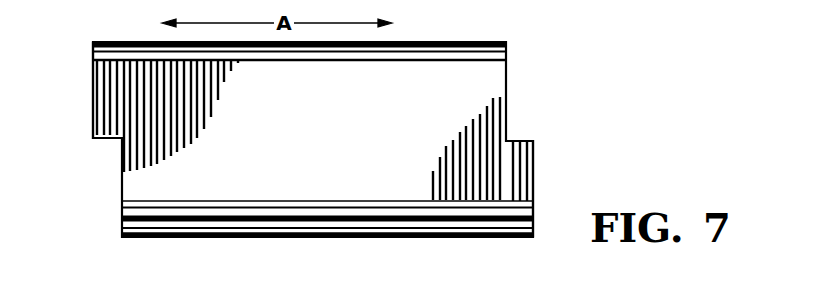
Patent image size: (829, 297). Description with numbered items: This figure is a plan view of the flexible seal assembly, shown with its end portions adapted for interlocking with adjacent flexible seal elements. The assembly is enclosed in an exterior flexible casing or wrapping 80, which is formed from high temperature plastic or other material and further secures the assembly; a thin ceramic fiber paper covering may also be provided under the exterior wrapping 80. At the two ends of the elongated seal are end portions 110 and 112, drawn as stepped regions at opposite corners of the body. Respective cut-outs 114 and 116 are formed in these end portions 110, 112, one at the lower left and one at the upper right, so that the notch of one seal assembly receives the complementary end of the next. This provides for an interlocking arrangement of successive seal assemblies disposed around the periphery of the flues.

The exterior flexible casing or wrapping 80 is at (344, 195).
The end portion 110 is at (95, 107).
The end portion 112 is at (533, 178).
The cut-out 114 is at (122, 196).
The cut-out 116 is at (506, 90).